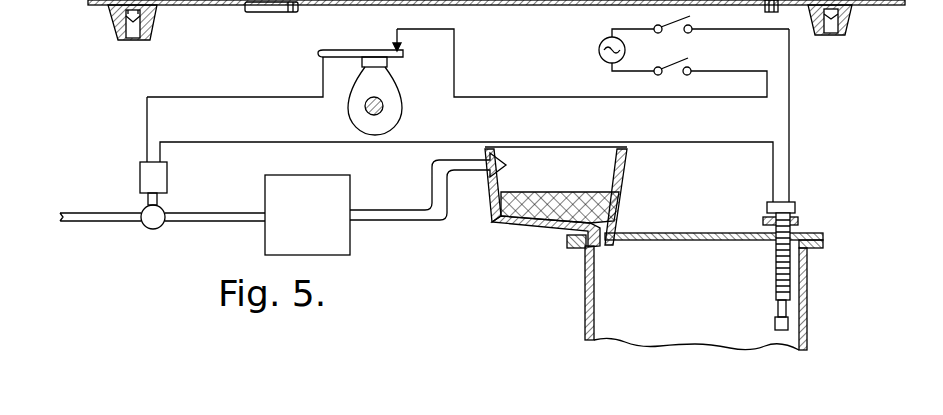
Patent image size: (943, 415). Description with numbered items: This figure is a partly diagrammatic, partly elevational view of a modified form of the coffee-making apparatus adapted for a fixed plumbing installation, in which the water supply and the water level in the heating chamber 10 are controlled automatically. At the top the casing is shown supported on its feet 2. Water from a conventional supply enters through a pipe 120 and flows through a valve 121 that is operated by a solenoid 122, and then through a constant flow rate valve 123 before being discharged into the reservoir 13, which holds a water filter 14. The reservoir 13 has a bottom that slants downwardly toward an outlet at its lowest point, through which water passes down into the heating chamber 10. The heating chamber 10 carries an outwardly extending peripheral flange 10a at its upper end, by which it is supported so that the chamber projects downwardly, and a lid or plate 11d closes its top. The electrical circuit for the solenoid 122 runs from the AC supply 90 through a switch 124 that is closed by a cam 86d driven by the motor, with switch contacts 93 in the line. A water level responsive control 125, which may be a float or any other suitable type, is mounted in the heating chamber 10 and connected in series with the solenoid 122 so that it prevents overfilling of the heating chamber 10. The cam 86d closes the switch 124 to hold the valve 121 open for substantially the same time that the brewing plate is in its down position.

The feet 2 is at (110, 28).
The heating chamber 10 is at (807, 302).
The peripheral flange 10a is at (814, 250).
The tank lid 11d is at (818, 230).
The reservoir 13 is at (626, 162).
The water filter 14 is at (578, 192).
The cam 86d is at (390, 112).
The AC supply 90 is at (598, 55).
The switch 93 is at (686, 62).
The pipe 120 is at (83, 213).
The valve 121 is at (154, 230).
The solenoid 122 is at (164, 177).
The constant flow rate valve 123 is at (350, 196).
The switch 124 is at (363, 50).
The water level responsive control 125 is at (794, 207).